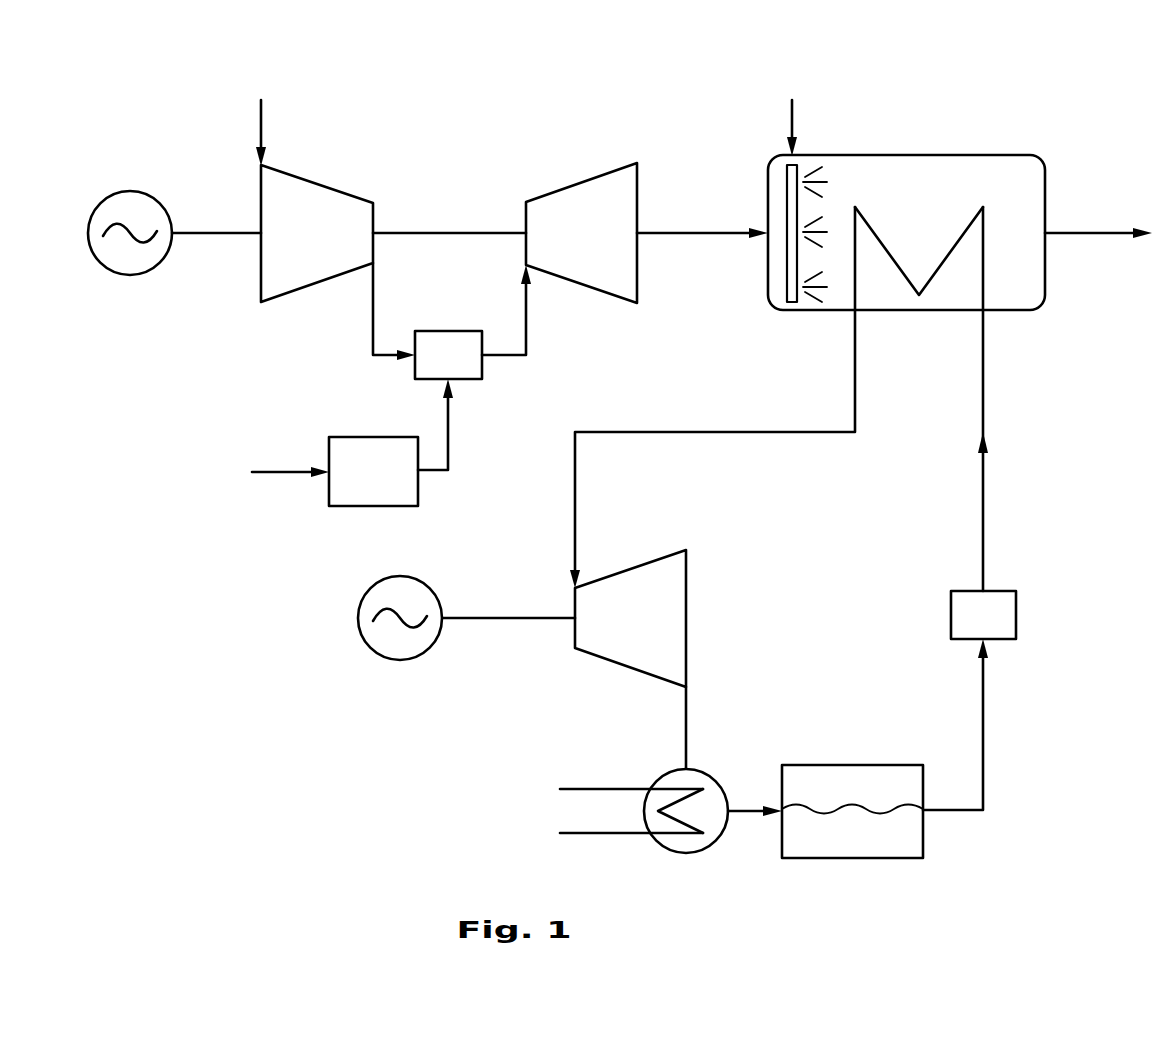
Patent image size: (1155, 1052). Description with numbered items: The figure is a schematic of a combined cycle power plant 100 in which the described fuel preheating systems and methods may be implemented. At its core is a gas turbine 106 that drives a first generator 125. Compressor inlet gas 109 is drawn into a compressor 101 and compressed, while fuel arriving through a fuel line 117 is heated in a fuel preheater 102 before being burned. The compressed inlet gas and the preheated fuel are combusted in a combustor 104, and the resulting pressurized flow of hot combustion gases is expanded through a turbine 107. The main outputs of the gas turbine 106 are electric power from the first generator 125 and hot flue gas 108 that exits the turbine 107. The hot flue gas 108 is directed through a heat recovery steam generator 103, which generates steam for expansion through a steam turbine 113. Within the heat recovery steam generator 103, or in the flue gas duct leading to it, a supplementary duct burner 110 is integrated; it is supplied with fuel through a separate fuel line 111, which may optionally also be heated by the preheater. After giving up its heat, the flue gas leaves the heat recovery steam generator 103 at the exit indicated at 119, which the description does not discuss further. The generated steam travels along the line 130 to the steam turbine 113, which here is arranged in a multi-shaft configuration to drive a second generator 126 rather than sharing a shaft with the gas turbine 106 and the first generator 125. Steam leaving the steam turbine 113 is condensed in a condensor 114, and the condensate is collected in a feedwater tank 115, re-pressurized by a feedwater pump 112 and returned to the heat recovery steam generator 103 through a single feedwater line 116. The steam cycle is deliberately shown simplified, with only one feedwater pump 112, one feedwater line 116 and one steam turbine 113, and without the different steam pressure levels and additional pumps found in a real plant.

The combined cycle power plant 100 is at (1030, 113).
The compressor 101 is at (294, 250).
The fuel preheater 102 is at (350, 487).
The heat recovery steam generator 103 is at (884, 196).
The combustor 104 is at (430, 366).
The gas turbine 106 is at (425, 219).
The turbine 107 is at (557, 251).
The hot flue gas 108 is at (718, 236).
The compressor inlet gas 109 is at (262, 117).
The duct burner 110 is at (790, 205).
The fuel line 111 is at (792, 113).
The feedwater pump 112 is at (1016, 615).
The steam turbine 113 is at (605, 635).
The condensor 114 is at (686, 845).
The feedwater tank 115 is at (829, 797).
The feedwater line 116 is at (985, 525).
The fuel line 117 is at (490, 442).
The flue gas outlet 119 is at (1085, 236).
The first generator 125 is at (123, 260).
The second generator 126 is at (403, 648).
The steam line 130 is at (642, 433).